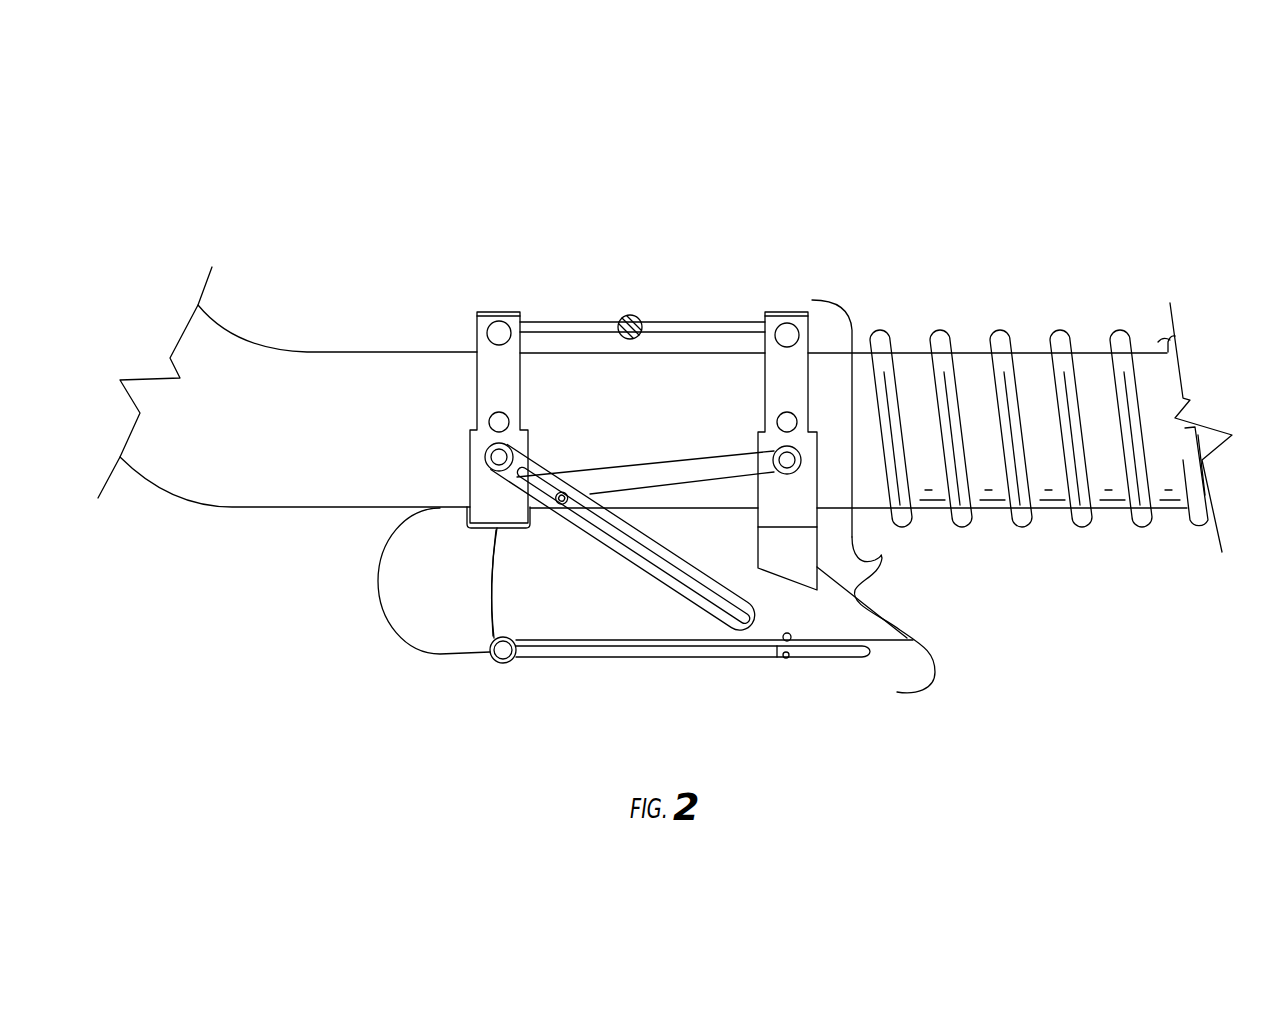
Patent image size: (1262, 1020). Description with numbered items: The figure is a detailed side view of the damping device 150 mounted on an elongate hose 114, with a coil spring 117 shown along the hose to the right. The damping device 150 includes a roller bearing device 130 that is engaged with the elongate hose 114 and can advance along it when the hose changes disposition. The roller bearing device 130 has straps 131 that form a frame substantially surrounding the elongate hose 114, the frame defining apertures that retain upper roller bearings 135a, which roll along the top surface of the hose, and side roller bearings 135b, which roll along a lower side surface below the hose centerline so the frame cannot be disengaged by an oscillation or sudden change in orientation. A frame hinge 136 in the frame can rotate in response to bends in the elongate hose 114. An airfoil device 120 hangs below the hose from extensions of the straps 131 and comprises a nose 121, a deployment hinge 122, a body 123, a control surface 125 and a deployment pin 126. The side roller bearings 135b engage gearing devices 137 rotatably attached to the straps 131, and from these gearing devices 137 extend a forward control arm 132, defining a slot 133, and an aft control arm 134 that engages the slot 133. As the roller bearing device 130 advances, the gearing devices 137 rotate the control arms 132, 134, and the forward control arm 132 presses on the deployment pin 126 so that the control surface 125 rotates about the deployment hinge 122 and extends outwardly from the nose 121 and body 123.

The elongate hose 114 is at (270, 377).
The coil spring 117 is at (1060, 345).
The airfoil device 120 is at (378, 655).
The nose 121 is at (415, 553).
The deployment hinge 122 is at (505, 665).
The body 123 is at (525, 582).
The control surface 125 is at (625, 650).
The deployment pin 126 is at (786, 662).
The roller bearing device 130 is at (723, 272).
The straps 131 is at (497, 385).
The forward control arm 132 is at (703, 563).
The slot 133 is at (723, 605).
The aft control arm 134 is at (640, 466).
The upper roller bearings 135a is at (493, 315).
The side roller bearings 135b is at (490, 422).
The frame hinge 136 is at (623, 317).
The gearing devices 137 is at (477, 453).
The damping device 150 is at (854, 536).